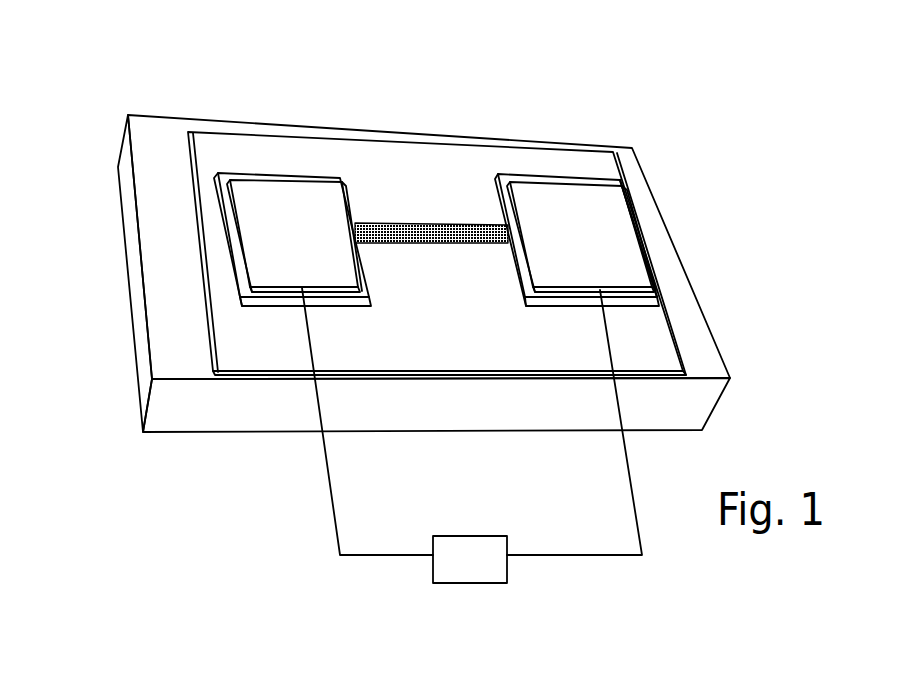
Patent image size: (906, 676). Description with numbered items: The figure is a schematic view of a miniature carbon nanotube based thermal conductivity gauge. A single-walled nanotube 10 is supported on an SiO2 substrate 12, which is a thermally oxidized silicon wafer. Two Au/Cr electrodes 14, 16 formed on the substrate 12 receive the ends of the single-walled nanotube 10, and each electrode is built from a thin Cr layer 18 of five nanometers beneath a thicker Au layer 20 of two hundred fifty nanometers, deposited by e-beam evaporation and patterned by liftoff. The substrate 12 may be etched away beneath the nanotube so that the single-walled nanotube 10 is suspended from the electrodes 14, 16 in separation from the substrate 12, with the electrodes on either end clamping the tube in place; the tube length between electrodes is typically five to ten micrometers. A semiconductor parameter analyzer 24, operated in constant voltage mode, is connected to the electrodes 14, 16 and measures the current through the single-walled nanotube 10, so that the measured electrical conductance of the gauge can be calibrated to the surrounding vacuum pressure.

The single-walled nanotube 10 is at (417, 223).
The SiO2 substrate 12 is at (208, 330).
The Au/Cr electrode 14 is at (213, 222).
The Au/Cr electrode 16 is at (635, 198).
The Cr layer 18 is at (220, 173).
The Au layer 20 is at (342, 295).
The semiconductor parameter analyzer 24 is at (428, 583).